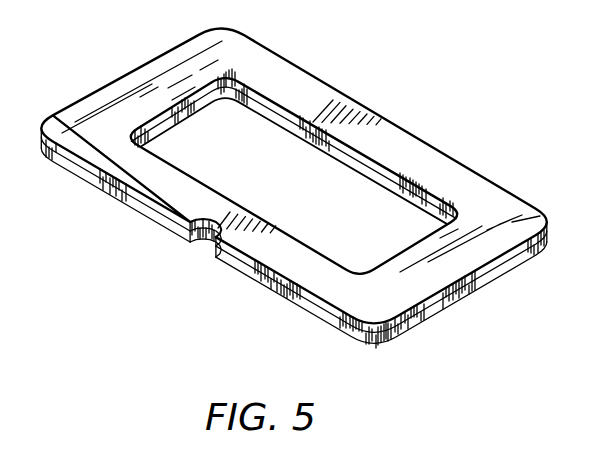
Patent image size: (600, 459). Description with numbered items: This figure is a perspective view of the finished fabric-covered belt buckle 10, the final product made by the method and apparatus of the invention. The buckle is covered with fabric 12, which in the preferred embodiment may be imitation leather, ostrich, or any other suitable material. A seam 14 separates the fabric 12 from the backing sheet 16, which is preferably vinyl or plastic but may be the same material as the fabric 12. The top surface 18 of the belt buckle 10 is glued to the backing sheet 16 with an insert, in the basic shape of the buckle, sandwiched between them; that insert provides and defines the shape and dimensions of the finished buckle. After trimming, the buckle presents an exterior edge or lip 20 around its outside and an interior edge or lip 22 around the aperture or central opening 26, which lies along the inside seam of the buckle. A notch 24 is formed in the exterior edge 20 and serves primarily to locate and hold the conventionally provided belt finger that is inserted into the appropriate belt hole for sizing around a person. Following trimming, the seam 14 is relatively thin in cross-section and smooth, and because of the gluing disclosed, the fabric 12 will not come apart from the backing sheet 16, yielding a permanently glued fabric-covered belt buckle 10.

The fabric-covered belt buckle 10 is at (301, 189).
The fabric 12 is at (495, 197).
The seam 14 is at (495, 277).
The backing sheet 16 is at (423, 322).
The top surface 18 is at (112, 153).
The exterior edge or lip 20 is at (266, 52).
The interior edge or lip 22 is at (278, 101).
The notch 24 is at (203, 240).
The aperture or central opening 26 is at (294, 169).